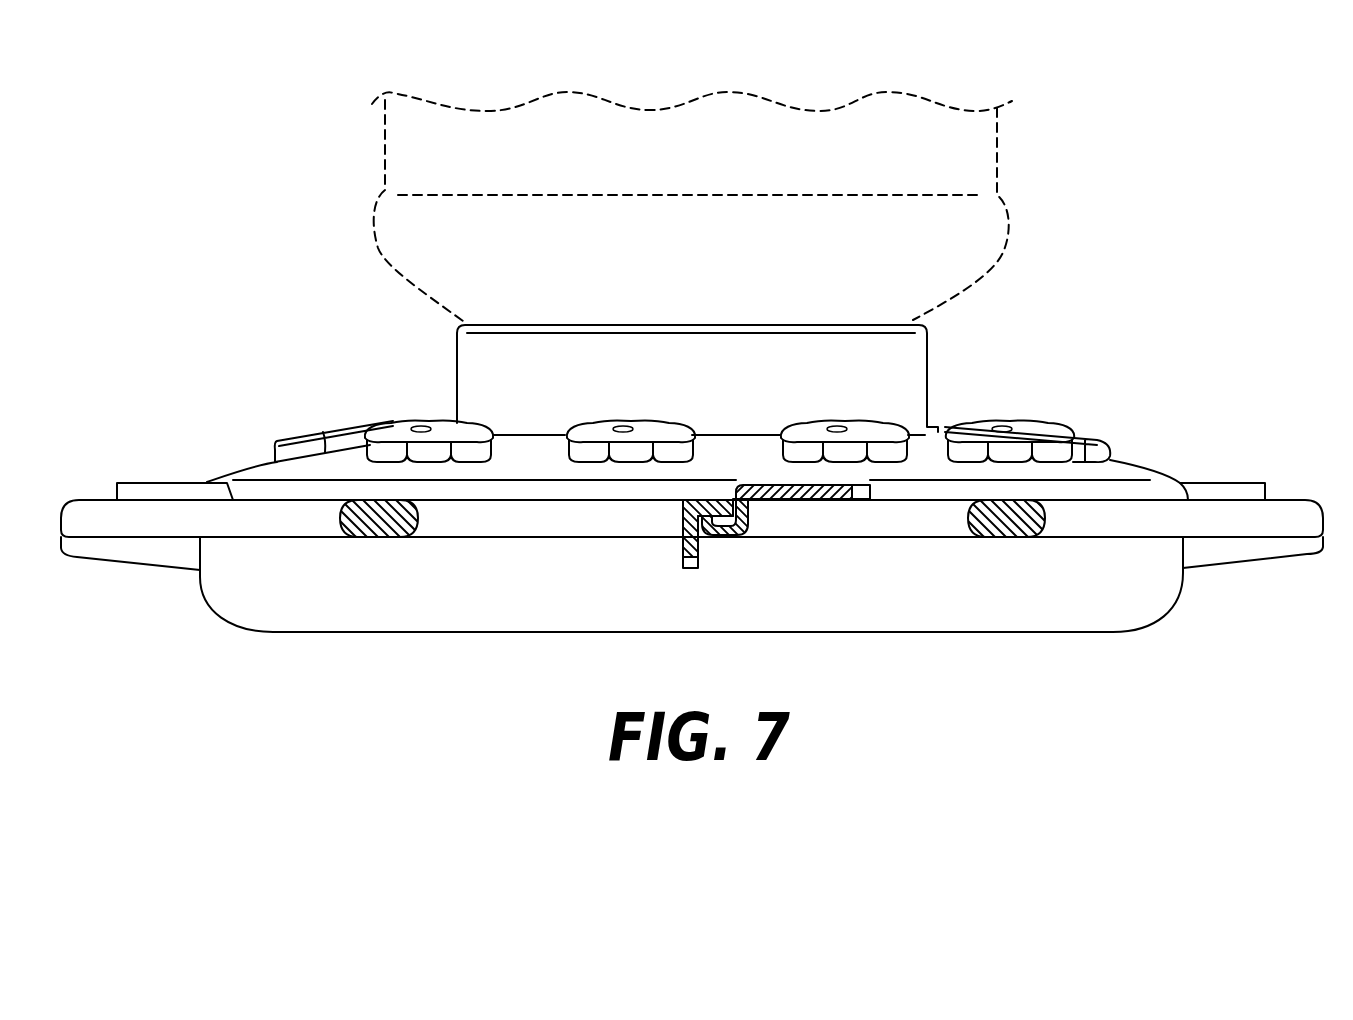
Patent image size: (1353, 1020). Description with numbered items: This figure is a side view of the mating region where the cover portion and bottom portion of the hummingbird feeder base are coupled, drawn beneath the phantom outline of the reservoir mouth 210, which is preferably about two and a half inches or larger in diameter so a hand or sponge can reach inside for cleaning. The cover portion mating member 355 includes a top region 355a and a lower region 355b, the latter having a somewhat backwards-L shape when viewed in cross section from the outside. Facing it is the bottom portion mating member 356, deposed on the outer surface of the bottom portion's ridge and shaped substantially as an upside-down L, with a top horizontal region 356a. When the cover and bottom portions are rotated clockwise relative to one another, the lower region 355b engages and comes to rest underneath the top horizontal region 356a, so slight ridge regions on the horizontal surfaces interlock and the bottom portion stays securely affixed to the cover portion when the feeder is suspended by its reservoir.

The mouth 210 is at (960, 293).
The cover portion mating member 355 is at (768, 488).
The top region of cover portion mating member 355a is at (805, 500).
The lower region of cover portion mating member 355b is at (745, 532).
The bottom portion mating member 356 is at (674, 480).
The top horizontal region of bottom portion mating member 356a is at (704, 500).